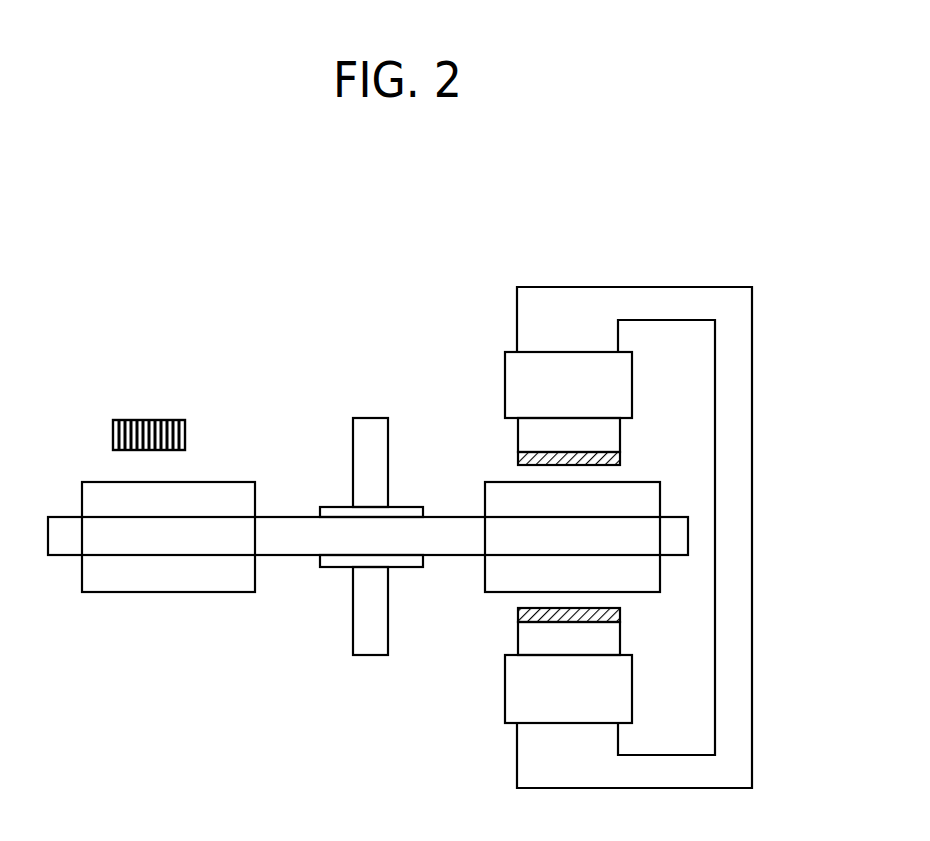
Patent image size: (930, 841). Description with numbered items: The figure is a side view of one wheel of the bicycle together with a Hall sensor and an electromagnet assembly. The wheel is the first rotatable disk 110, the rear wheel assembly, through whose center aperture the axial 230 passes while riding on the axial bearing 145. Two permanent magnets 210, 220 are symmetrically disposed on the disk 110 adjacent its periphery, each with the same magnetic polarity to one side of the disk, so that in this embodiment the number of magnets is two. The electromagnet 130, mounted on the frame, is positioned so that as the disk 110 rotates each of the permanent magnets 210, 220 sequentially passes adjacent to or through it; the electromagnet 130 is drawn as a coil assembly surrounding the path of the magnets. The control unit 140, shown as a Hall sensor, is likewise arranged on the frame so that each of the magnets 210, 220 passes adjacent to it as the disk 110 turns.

The first rotatable disk 110 is at (290, 557).
The electromagnet 130 is at (755, 480).
The control unit 140 is at (108, 435).
The axial bearing 145 is at (327, 505).
The permanent magnet 210 is at (88, 598).
The permanent magnet 220 is at (630, 480).
The axial 230 is at (382, 432).